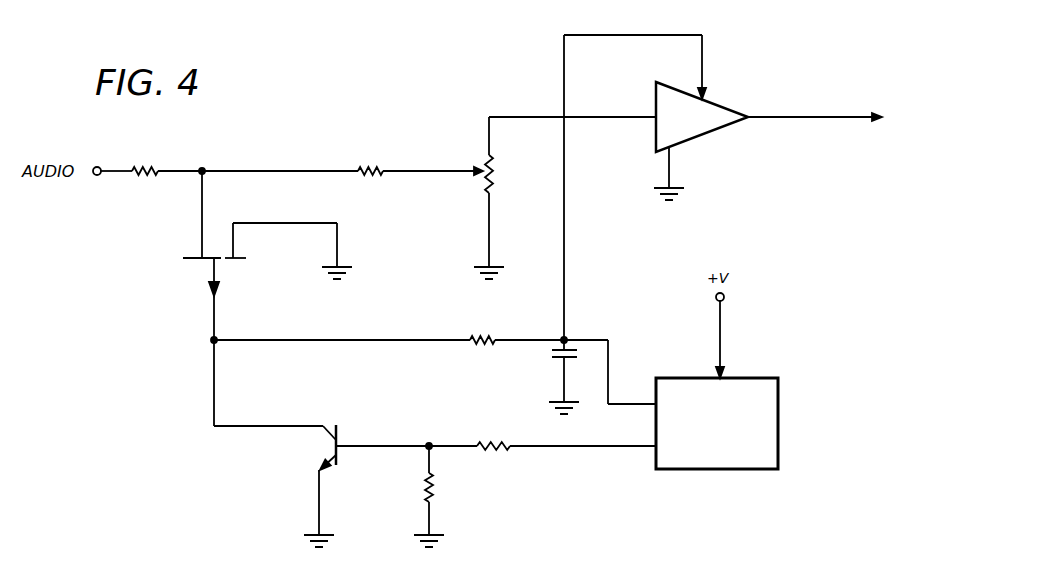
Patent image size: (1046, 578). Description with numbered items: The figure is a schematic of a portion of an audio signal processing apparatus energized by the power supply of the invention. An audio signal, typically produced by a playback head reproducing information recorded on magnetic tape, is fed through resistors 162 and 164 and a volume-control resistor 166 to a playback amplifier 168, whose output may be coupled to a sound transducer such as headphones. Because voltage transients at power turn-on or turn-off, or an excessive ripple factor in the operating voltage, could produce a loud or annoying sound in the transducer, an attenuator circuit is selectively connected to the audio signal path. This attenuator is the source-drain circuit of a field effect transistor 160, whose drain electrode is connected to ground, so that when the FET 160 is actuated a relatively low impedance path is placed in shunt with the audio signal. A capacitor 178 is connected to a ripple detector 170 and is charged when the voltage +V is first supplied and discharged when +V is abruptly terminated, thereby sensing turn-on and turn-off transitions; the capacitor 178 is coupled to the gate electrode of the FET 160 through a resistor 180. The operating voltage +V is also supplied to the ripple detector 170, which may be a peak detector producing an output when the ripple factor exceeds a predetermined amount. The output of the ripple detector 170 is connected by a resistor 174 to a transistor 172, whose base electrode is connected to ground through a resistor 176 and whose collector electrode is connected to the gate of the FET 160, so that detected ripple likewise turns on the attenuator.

The field effect transistor 160 is at (192, 262).
The resistor 162 is at (151, 178).
The resistor 164 is at (369, 167).
The volume-control resistor 166 is at (485, 181).
The playback amplifier 168 is at (702, 136).
The ripple detector 170 is at (720, 471).
The transistor 172 is at (339, 433).
The resistor 174 is at (498, 450).
The resistor 176 is at (433, 494).
The capacitor 178 is at (556, 357).
The resistor 180 is at (488, 347).